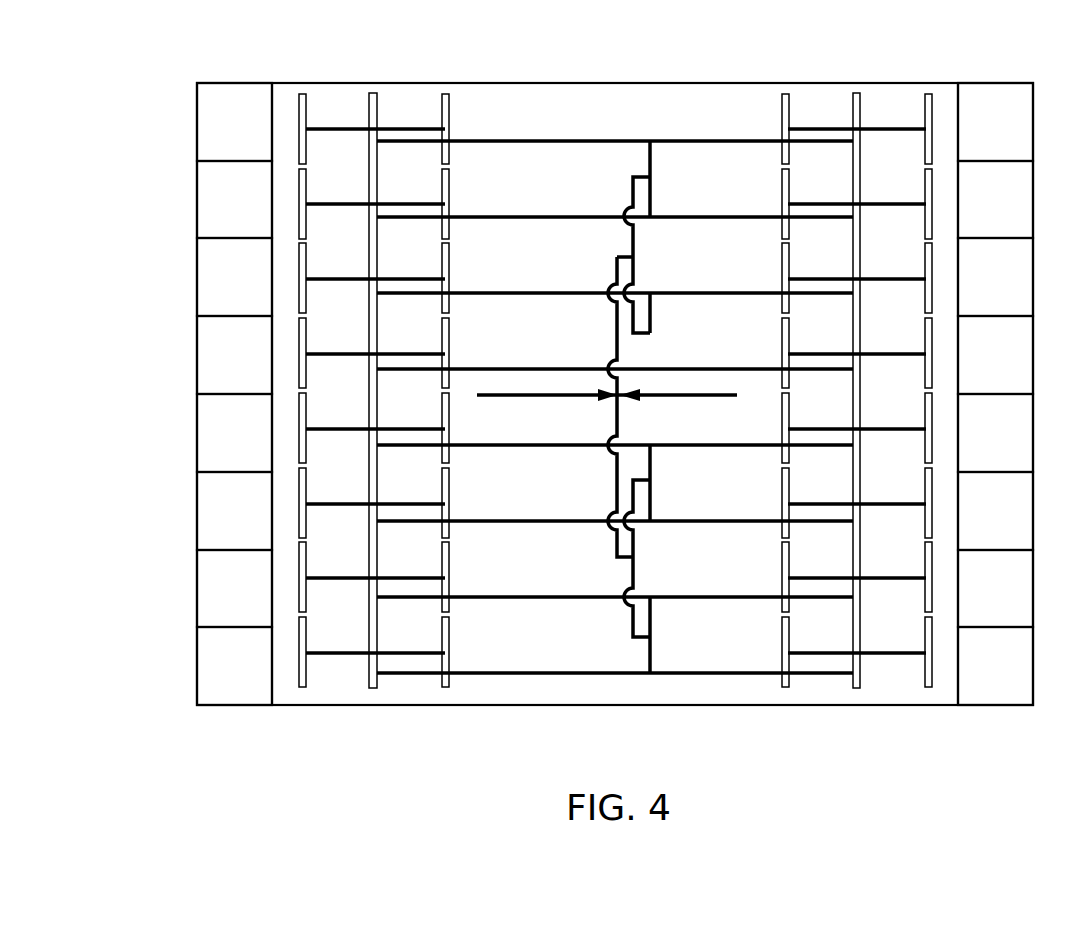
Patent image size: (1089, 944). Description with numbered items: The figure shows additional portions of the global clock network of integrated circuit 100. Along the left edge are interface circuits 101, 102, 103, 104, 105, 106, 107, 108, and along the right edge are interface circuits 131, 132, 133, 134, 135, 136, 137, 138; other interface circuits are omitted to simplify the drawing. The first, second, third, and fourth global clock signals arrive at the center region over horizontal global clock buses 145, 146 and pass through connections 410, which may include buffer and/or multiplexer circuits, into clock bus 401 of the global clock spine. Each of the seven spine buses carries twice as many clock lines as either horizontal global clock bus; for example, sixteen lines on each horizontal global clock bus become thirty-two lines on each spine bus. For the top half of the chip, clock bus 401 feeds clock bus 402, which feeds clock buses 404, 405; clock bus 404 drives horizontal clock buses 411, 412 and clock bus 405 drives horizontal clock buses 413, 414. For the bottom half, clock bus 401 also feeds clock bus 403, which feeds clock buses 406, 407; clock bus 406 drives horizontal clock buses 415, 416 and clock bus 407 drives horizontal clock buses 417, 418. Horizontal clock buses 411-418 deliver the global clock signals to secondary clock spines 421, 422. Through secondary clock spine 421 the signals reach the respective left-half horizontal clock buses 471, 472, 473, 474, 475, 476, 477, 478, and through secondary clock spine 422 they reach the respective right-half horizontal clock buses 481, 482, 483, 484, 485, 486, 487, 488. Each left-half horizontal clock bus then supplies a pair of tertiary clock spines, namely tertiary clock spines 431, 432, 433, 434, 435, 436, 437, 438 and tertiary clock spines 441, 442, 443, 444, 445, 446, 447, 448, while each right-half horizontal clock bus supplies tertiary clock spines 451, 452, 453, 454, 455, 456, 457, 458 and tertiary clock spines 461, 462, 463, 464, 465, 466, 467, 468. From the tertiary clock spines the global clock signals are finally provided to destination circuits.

The integrated circuit 100 is at (253, 48).
The interface circuit 101 is at (197, 137).
The interface circuit 102 is at (197, 215).
The interface circuit 103 is at (197, 292).
The interface circuit 104 is at (197, 370).
The interface circuit 105 is at (197, 448).
The interface circuit 106 is at (197, 526).
The interface circuit 107 is at (197, 604).
The interface circuit 108 is at (197, 681).
The interface circuit 131 is at (1033, 137).
The interface circuit 132 is at (1033, 215).
The interface circuit 133 is at (1033, 292).
The interface circuit 134 is at (1033, 370).
The interface circuit 135 is at (1033, 448).
The interface circuit 136 is at (1033, 526).
The interface circuit 137 is at (1033, 604).
The interface circuit 138 is at (1033, 681).
The horizontal global clock bus 145 is at (550, 398).
The horizontal global clock bus 146 is at (680, 397).
The clock bus 401 is at (615, 318).
The clock bus 402 is at (631, 191).
The clock bus 403 is at (632, 574).
The clock bus 404 is at (652, 162).
The clock bus 405 is at (652, 310).
The clock bus 406 is at (652, 462).
The clock bus 407 is at (652, 617).
The connections 410 is at (612, 400).
The horizontal clock bus 411 is at (574, 139).
The horizontal clock bus 412 is at (571, 215).
The horizontal clock bus 413 is at (571, 291).
The horizontal clock bus 414 is at (564, 367).
The horizontal clock bus 415 is at (552, 448).
The horizontal clock bus 416 is at (565, 524).
The horizontal clock bus 417 is at (574, 600).
The horizontal clock bus 418 is at (549, 676).
The secondary clock spine 421 is at (369, 167).
The secondary clock spine 422 is at (860, 167).
The tertiary clock spine 431 is at (307, 120).
The tertiary clock spine 432 is at (307, 194).
The tertiary clock spine 433 is at (307, 267).
The tertiary clock spine 434 is at (307, 341).
The tertiary clock spine 435 is at (307, 414).
The tertiary clock spine 436 is at (307, 488).
The tertiary clock spine 437 is at (307, 562).
The tertiary clock spine 438 is at (307, 635).
The tertiary clock spine 441 is at (450, 120).
The tertiary clock spine 442 is at (450, 194).
The tertiary clock spine 443 is at (450, 267).
The tertiary clock spine 444 is at (450, 341).
The tertiary clock spine 445 is at (450, 408).
The tertiary clock spine 446 is at (450, 488).
The tertiary clock spine 447 is at (450, 562).
The tertiary clock spine 448 is at (450, 635).
The tertiary clock spine 451 is at (781, 120).
The tertiary clock spine 452 is at (781, 194).
The tertiary clock spine 453 is at (781, 267).
The tertiary clock spine 454 is at (781, 341).
The tertiary clock spine 455 is at (781, 408).
The tertiary clock spine 456 is at (781, 488).
The tertiary clock spine 457 is at (781, 562).
The tertiary clock spine 458 is at (781, 635).
The tertiary clock spine 461 is at (924, 120).
The tertiary clock spine 462 is at (924, 194).
The tertiary clock spine 463 is at (924, 267).
The tertiary clock spine 464 is at (924, 341).
The tertiary clock spine 465 is at (924, 414).
The tertiary clock spine 466 is at (924, 488).
The tertiary clock spine 467 is at (924, 562).
The tertiary clock spine 468 is at (924, 635).
The horizontal clock bus 471 is at (387, 126).
The horizontal clock bus 472 is at (387, 201).
The horizontal clock bus 473 is at (387, 276).
The horizontal clock bus 474 is at (387, 351).
The horizontal clock bus 475 is at (387, 426).
The horizontal clock bus 476 is at (387, 501).
The horizontal clock bus 477 is at (387, 576).
The horizontal clock bus 478 is at (387, 651).
The horizontal clock bus 481 is at (800, 126).
The horizontal clock bus 482 is at (800, 201).
The horizontal clock bus 483 is at (800, 276).
The horizontal clock bus 484 is at (800, 351).
The horizontal clock bus 485 is at (800, 426).
The horizontal clock bus 486 is at (800, 501).
The horizontal clock bus 487 is at (800, 576).
The horizontal clock bus 488 is at (800, 651).